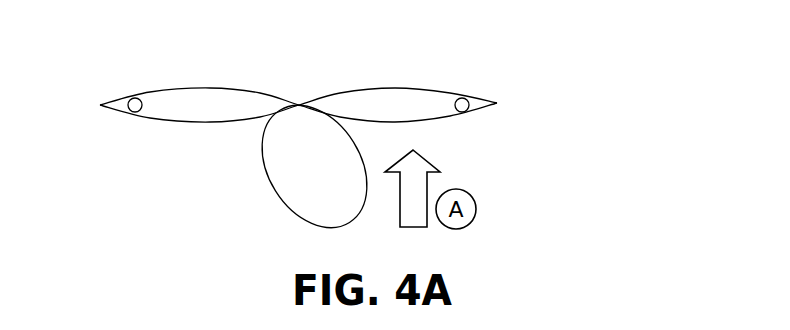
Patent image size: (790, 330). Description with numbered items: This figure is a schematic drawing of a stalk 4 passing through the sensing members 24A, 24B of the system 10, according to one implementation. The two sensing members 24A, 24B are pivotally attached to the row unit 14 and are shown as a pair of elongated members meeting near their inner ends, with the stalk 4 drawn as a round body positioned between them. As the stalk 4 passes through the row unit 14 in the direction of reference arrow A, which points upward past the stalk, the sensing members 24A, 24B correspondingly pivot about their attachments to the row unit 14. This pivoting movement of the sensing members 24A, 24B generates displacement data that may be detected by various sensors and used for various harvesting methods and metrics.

The sensing member 24A is at (133, 90).
The sensing member 24B is at (495, 104).
The stalk 4 is at (277, 173).
The system 10 is at (598, 60).
The row unit 14 is at (658, 81).